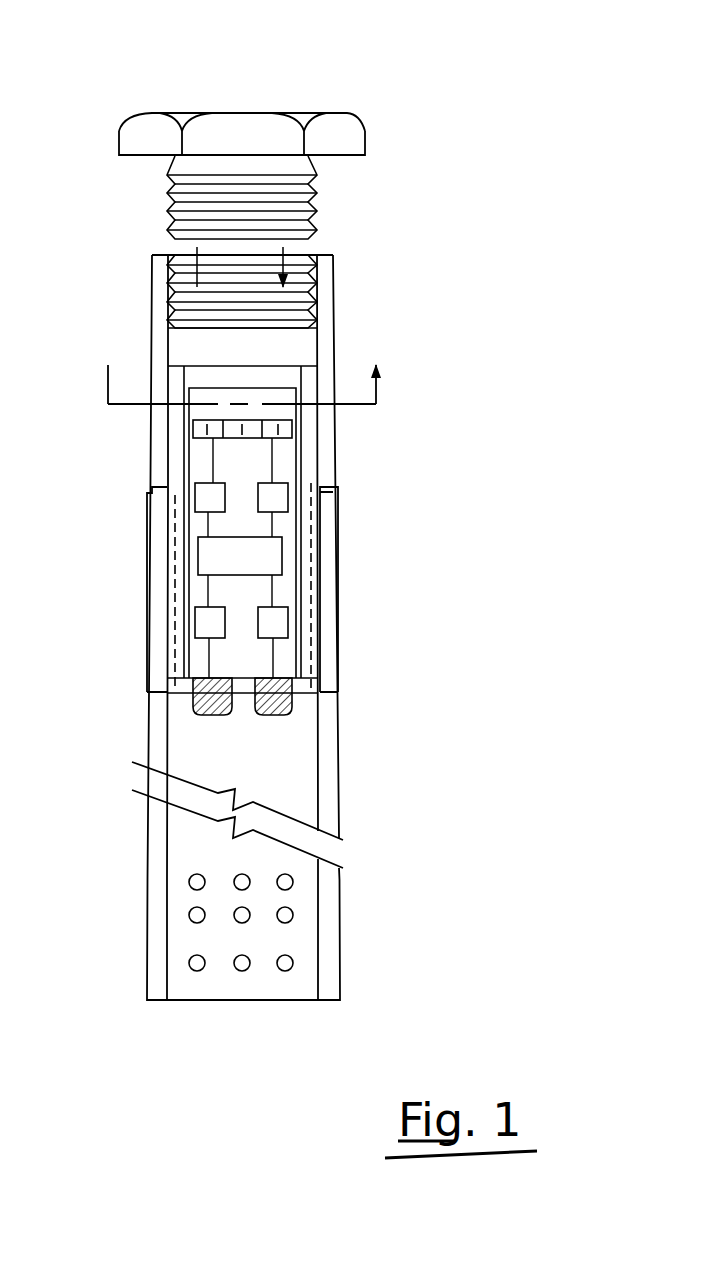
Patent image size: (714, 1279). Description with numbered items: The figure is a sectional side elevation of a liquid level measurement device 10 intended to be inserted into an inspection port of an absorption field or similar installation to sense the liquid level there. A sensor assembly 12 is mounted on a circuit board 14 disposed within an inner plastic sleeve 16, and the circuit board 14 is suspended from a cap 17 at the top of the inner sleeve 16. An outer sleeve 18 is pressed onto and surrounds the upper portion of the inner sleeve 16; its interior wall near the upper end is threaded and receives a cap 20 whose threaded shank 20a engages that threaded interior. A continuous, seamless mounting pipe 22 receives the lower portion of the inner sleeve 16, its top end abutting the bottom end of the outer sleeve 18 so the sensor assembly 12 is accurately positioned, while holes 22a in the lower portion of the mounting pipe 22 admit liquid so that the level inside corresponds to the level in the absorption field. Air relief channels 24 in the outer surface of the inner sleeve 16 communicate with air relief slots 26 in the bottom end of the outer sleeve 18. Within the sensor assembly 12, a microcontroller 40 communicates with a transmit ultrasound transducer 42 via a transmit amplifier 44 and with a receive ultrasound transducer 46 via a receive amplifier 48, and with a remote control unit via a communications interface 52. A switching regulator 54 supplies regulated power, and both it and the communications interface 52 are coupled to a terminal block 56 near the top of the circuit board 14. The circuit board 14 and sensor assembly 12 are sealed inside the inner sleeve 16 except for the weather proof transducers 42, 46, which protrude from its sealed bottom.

The liquid level measurement device 10 is at (500, 97).
The sensor assembly 12 is at (327, 722).
The circuit board 14 is at (245, 660).
The inner plastic sleeve 16 is at (310, 392).
The cap 17 is at (283, 345).
The outer sleeve 18 is at (158, 355).
The cap 20 is at (362, 134).
The threaded shank 20a is at (305, 200).
The mounting pipe 22 is at (329, 910).
The holes 22a is at (158, 498).
The air relief channels 24 is at (315, 583).
The air relief slots 26 is at (330, 485).
The microcontroller 40 is at (268, 555).
The transmit ultrasound transducer 42 is at (293, 702).
The transmit amplifier 44 is at (290, 613).
The receive ultrasound transducer 46 is at (215, 708).
The receive amplifier 48 is at (193, 613).
The communications interface 52 is at (200, 492).
The switching regulator 54 is at (282, 487).
The terminal block 56 is at (273, 432).